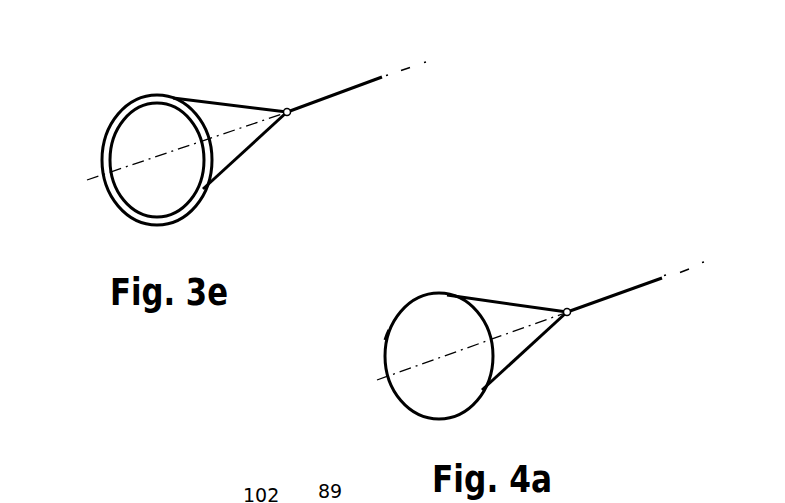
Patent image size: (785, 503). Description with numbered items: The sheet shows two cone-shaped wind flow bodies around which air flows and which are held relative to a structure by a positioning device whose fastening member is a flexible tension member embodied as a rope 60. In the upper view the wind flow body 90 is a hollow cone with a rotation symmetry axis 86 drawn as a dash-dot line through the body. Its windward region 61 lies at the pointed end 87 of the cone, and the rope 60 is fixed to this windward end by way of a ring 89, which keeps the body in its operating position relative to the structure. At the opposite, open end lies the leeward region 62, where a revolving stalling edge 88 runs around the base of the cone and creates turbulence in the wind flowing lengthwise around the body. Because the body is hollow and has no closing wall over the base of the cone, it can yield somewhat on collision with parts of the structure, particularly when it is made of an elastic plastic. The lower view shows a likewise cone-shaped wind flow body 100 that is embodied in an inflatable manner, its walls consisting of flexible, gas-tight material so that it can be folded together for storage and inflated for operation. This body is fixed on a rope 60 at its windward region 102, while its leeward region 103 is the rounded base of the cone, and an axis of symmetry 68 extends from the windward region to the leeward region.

In FIG. 3E, the wind flow body 90 is at (109, 94).
In FIG. 3E, the leeward region 62 is at (88, 134).
In FIG. 3E, the windward region 61 is at (247, 81).
In FIG. 3E, the pointed end 87 is at (267, 122).
In FIG. 4A, the pointed end 87 is at (545, 325).
In FIG. 3E, the ring 89 is at (289, 109).
In FIG. 4A, the ring 89 is at (569, 309).
In FIG. 3E, the rope 60 is at (337, 97).
In FIG. 4A, the rope 60 is at (615, 297).
In FIG. 3E, the rotation symmetry axis 86 is at (407, 70).
In FIG. 3E, the revolving stalling edge 88 is at (173, 222).
In FIG. 4A, the revolving stalling edge 88 is at (453, 419).
In FIG. 4A, the wind flow body 100 is at (390, 293).
In FIG. 4A, the leeward region 103 is at (369, 333).
In FIG. 4A, the windward region 102 is at (527, 279).
In FIG. 4A, the axis of symmetry 68 is at (687, 272).